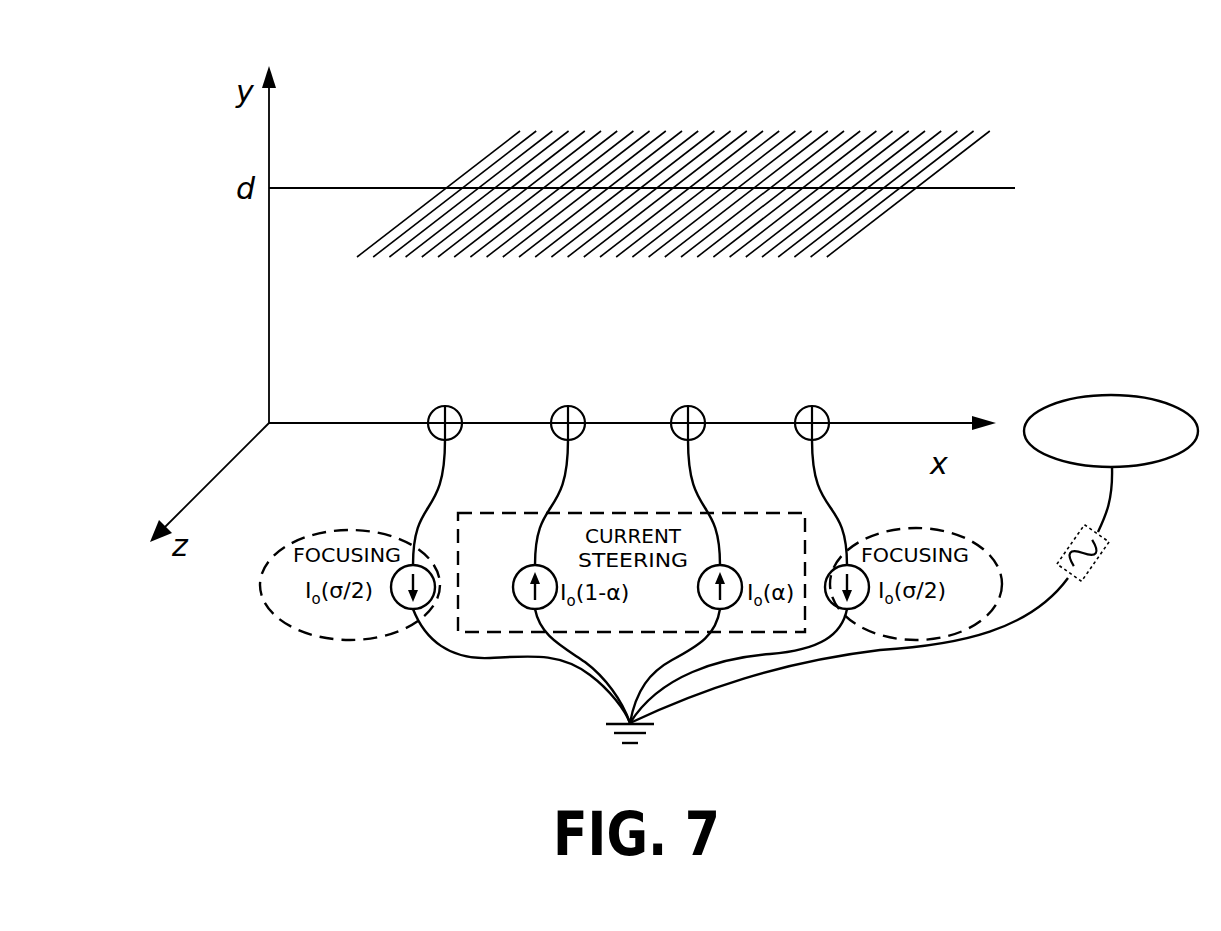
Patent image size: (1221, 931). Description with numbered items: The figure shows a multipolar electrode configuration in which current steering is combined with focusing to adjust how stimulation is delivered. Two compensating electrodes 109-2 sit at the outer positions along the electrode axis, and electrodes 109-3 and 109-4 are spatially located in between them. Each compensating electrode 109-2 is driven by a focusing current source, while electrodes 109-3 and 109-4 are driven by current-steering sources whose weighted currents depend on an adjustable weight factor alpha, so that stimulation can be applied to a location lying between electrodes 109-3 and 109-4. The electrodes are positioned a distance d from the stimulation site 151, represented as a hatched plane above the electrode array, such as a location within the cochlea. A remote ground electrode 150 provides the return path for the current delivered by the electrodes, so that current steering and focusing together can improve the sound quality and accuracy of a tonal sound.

The stimulation site 151 is at (710, 160).
The compensating electrodes 109-2 is at (445, 407).
The electrode 109-3 is at (568, 407).
The electrode 109-4 is at (688, 407).
The remote ground electrode 150 is at (1115, 395).